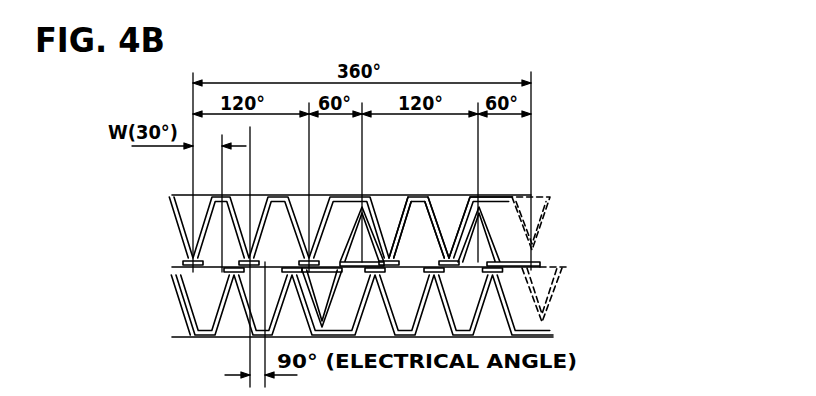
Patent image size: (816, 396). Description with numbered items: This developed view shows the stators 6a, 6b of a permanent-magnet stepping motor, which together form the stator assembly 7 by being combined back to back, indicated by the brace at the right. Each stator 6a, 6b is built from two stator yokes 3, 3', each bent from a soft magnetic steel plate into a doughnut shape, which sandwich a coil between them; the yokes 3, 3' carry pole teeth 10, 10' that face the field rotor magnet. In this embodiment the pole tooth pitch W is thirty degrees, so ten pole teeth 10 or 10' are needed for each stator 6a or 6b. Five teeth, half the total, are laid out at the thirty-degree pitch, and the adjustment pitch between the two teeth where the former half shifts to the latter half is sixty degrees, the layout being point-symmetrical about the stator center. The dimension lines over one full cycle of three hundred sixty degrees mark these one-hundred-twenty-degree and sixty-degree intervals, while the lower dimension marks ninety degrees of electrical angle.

The stator yoke 3 is at (508, 199).
The stator yoke 3' is at (468, 226).
The pole tooth 10 is at (444, 207).
The pole tooth 10' is at (398, 200).
The stator 6a is at (598, 225).
The stator 6b is at (598, 302).
The stator assembly 7 is at (708, 208).